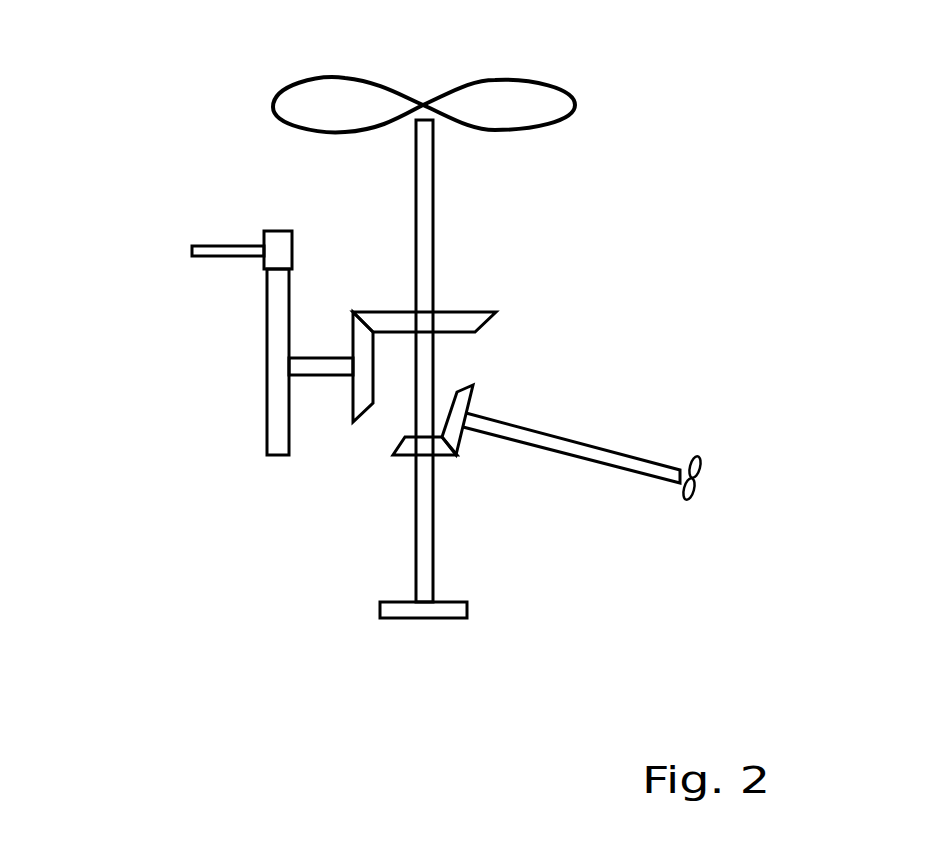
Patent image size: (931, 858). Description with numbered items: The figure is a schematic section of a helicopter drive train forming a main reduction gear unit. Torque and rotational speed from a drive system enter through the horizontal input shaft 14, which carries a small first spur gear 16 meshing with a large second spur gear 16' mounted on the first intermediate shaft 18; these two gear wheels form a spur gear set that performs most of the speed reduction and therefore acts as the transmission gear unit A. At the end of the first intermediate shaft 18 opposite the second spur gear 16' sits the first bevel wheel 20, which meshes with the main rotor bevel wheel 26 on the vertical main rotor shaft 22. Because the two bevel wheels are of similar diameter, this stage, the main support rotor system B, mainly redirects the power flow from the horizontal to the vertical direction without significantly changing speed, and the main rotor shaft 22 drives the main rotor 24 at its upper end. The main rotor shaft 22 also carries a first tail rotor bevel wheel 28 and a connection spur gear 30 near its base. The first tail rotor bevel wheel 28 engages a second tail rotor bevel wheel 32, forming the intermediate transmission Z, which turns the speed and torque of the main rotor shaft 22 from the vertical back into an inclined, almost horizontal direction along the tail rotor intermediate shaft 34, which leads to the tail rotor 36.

The input shaft 14 is at (220, 246).
The first spur gear 16 is at (190, 221).
The second spur gear 16' is at (179, 362).
The first intermediate shaft 18 is at (320, 376).
The first bevel wheel 20 is at (353, 336).
The main rotor shaft 22 is at (433, 212).
The main rotor 24 is at (565, 88).
The main rotor bevel wheel 26 is at (486, 323).
The first tail rotor bevel wheel 28 is at (440, 456).
The connection spur gear 30 is at (458, 618).
The second tail rotor bevel wheel 32 is at (473, 398).
The tail rotor intermediate shaft 34 is at (605, 445).
The tail rotor 36 is at (698, 484).
The transmission gear unit A is at (242, 400).
The main support rotor system B is at (498, 298).
The intermediate transmission Z is at (476, 452).